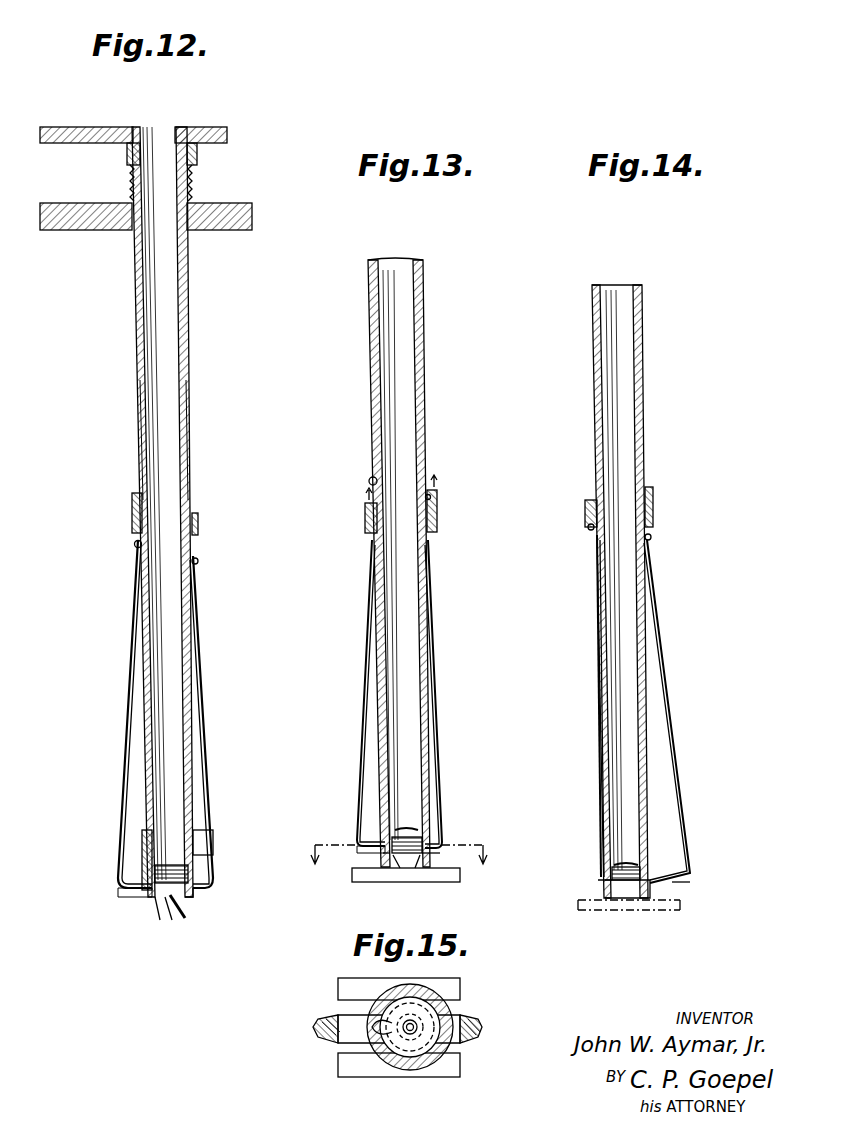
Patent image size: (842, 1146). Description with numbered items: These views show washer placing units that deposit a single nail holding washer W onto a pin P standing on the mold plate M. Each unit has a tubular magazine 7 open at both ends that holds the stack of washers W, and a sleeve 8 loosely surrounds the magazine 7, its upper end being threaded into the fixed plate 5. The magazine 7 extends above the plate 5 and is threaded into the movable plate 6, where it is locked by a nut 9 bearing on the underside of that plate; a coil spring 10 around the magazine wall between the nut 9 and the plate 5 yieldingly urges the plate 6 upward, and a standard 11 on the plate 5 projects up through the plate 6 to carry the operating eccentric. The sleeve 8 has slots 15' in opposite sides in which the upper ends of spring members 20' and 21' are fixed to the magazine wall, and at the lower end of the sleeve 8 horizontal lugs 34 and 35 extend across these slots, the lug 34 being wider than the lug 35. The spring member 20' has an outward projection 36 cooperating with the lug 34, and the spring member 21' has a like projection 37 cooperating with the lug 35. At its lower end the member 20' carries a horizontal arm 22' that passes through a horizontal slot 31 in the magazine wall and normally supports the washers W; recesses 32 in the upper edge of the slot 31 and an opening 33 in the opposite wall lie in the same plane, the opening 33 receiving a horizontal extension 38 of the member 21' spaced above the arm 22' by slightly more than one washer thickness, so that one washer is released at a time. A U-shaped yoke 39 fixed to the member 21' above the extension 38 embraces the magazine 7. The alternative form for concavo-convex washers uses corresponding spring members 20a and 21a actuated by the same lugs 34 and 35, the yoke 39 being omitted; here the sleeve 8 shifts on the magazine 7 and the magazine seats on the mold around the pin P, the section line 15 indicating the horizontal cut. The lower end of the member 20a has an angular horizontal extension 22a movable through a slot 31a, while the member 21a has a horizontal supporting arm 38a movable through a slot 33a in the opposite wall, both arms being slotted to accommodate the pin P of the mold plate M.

In FIG. 12, the plate 5 is at (108, 220).
In FIG. 12, the movable plate 6 is at (110, 128).
In FIG. 12, the tubular magazine 7 is at (158, 282).
In FIG. 13, the tubular magazine 7 is at (405, 311).
In FIG. 14, the tubular magazine 7 is at (622, 318).
In FIG. 15, the tubular magazine 7 is at (425, 990).
In FIG. 12, the sleeve 8 is at (135, 322).
In FIG. 13, the sleeve 8 is at (424, 333).
In FIG. 14, the sleeve 8 is at (643, 332).
In FIG. 12, the nut 9 is at (127, 152).
In FIG. 12, the coil spring 10 is at (130, 186).
In FIG. 12, the standard 11 is at (146, 866).
In FIG. 12, the slots 15' is at (159, 421).
In FIG. 13, the section line 15 is at (407, 840).
In FIG. 12, the spring member 20' is at (103, 714).
In FIG. 12, the spring member 21' is at (226, 722).
In FIG. 13, the spring member 20a is at (365, 660).
In FIG. 14, the spring member 20a is at (600, 680).
In FIG. 15, the spring member 20a is at (318, 1027).
In FIG. 13, the spring member 21a is at (436, 664).
In FIG. 14, the spring member 21a is at (662, 658).
In FIG. 15, the spring member 21a is at (482, 1020).
In FIG. 12, the horizontal arm 22' is at (123, 915).
In FIG. 13, the angular horizontal extension 22a is at (368, 855).
In FIG. 14, the angular horizontal extension 22a is at (628, 885).
In FIG. 15, the angular horizontal extension 22a is at (350, 1046).
In FIG. 12, the horizontal slot 31 is at (157, 900).
In FIG. 13, the slot 31a is at (384, 845).
In FIG. 14, the slot 31a is at (608, 882).
In FIG. 15, the slot 31a is at (375, 1045).
In FIG. 12, the recess 32 is at (167, 902).
In FIG. 12, the opening 33 is at (190, 880).
In FIG. 13, the slot 33a is at (424, 848).
In FIG. 14, the slot 33a is at (648, 888).
In FIG. 15, the slot 33a is at (440, 1062).
In FIG. 12, the horizontal lug 34 is at (131, 510).
In FIG. 13, the horizontal lug 34 is at (365, 518).
In FIG. 14, the horizontal lug 34 is at (585, 516).
In FIG. 12, the horizontal lug 35 is at (200, 522).
In FIG. 13, the horizontal lug 35 is at (438, 513).
In FIG. 14, the horizontal lug 35 is at (655, 500).
In FIG. 12, the outward bend or projection 36 is at (134, 544).
In FIG. 13, the outward bend or projection 36 is at (368, 481).
In FIG. 14, the outward bend or projection 36 is at (588, 530).
In FIG. 12, the projection 37 is at (199, 560).
In FIG. 13, the projection 37 is at (437, 500).
In FIG. 14, the projection 37 is at (652, 537).
In FIG. 12, the horizontal extension 38 is at (205, 890).
In FIG. 13, the horizontal supporting arm 38a is at (440, 853).
In FIG. 14, the horizontal supporting arm 38a is at (690, 882).
In FIG. 15, the horizontal supporting arm 38a is at (450, 1040).
In FIG. 12, the U-shaped yoke 39 is at (203, 842).
In FIG. 12, the washers W is at (170, 905).
In FIG. 13, the washers W is at (408, 830).
In FIG. 14, the washers W is at (626, 862).
In FIG. 15, the washers W is at (428, 1018).
In FIG. 13, the pin P is at (407, 868).
In FIG. 15, the pin P is at (410, 1032).
In FIG. 13, the mold plate M is at (454, 884).
In FIG. 14, the mold plate M is at (582, 912).
In FIG. 15, the mold plate M is at (399, 1027).